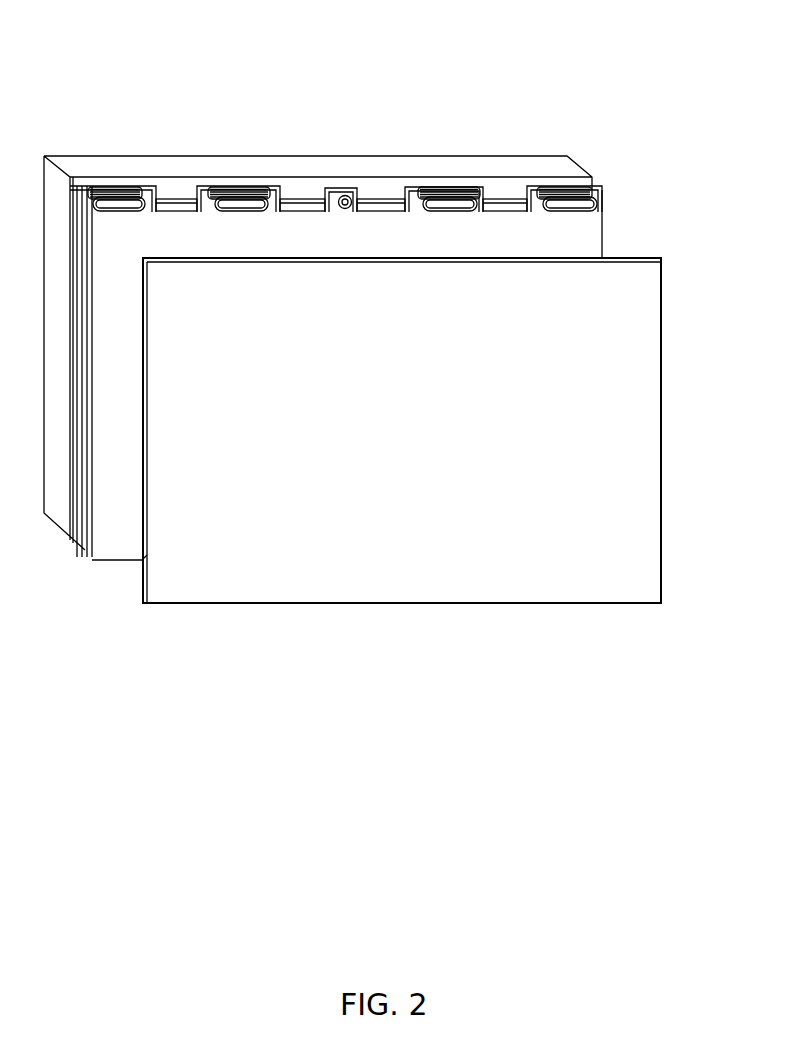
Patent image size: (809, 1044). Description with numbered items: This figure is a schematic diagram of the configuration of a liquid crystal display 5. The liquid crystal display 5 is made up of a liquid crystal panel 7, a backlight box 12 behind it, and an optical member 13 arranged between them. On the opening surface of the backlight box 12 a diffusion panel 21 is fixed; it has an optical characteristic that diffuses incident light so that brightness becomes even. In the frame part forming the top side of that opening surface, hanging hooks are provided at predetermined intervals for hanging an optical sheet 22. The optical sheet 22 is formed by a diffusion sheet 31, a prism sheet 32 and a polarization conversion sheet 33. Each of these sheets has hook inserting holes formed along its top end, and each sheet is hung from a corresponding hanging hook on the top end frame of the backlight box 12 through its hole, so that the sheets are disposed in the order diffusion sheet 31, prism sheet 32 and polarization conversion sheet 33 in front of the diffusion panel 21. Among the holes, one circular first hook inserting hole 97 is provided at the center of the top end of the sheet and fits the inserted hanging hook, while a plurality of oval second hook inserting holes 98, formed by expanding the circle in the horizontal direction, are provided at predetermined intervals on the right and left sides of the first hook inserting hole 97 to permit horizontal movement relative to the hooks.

The liquid crystal display 5 is at (599, 100).
The backlight box 12 is at (461, 160).
The second hook inserting hole 98 is at (113, 190).
The first hook inserting hole 97 is at (341, 196).
The liquid crystal panel 7 is at (470, 606).
The optical member 13 is at (510, 688).
The optical sheet 22 is at (352, 688).
The polarization conversion sheet 33 is at (113, 557).
The prism sheet 32 is at (93, 557).
The diffusion sheet 31 is at (83, 553).
The diffusion panel 21 is at (77, 507).